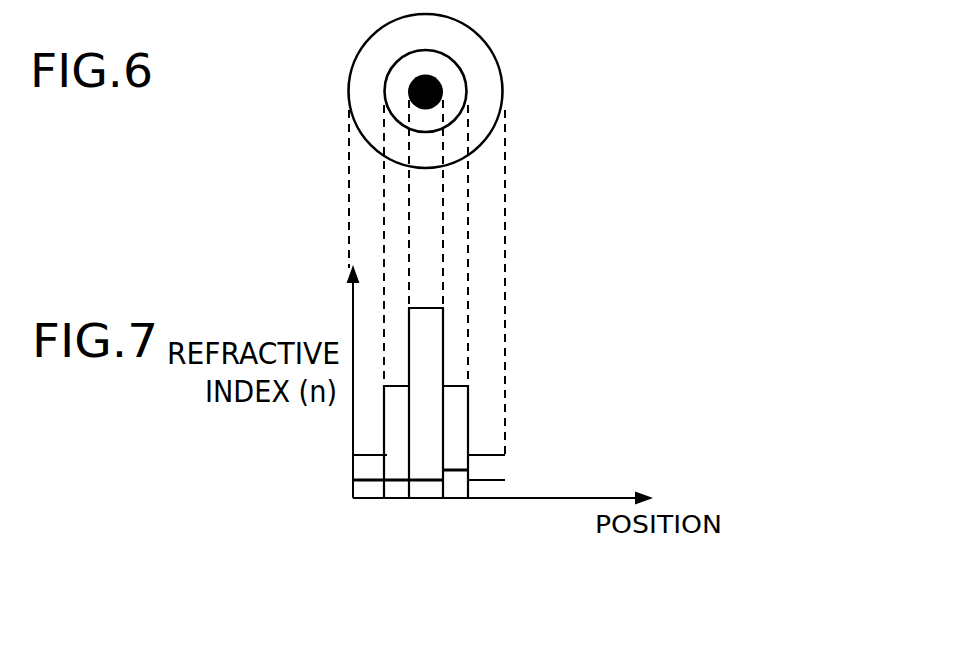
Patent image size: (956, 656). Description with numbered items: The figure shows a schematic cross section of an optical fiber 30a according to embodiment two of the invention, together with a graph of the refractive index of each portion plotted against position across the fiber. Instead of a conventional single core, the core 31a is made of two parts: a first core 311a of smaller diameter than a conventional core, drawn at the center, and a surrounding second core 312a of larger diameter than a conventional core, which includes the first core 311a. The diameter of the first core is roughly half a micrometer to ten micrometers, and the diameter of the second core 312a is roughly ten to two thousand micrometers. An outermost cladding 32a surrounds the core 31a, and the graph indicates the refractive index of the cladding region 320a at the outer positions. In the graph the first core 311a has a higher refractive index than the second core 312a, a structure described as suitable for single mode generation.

In FIG. 6, the optical fiber 30a is at (444, 111).
In FIG. 6, the core 31a is at (528, 85).
In FIG. 6, the first core 311a is at (440, 88).
In FIG. 7, the first core 311a is at (433, 493).
In FIG. 6, the second core 312a is at (453, 106).
In FIG. 7, the second core 312a is at (400, 500).
In FIG. 6, the cladding 32a is at (450, 150).
In FIG. 7, the cladding refractive index region 320a is at (370, 485).